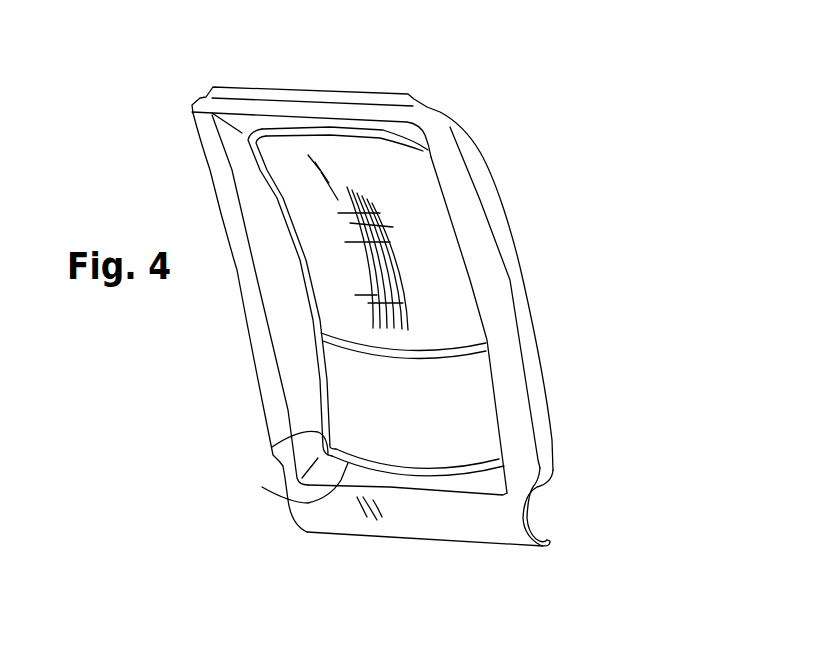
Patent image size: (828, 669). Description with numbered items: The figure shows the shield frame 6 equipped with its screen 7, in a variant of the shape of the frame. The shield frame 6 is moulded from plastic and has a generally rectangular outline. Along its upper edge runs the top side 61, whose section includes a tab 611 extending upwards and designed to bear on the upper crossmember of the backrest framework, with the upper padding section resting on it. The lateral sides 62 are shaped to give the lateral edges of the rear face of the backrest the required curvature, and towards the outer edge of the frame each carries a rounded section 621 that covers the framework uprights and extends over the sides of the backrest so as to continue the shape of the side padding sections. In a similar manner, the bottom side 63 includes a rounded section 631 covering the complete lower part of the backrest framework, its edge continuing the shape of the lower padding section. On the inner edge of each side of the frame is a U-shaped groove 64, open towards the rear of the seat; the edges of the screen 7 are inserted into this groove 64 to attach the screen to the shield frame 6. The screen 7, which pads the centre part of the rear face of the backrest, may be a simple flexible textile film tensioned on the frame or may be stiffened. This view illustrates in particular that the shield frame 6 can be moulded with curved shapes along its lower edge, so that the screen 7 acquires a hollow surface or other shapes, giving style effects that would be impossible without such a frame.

The shield frame 6 is at (457, 183).
The top side 61 is at (393, 127).
The tab 611 is at (245, 92).
The lateral sides 62 is at (272, 350).
The rounded section 621 is at (532, 350).
The bottom side 63 is at (353, 478).
The rounded section 631 is at (447, 517).
The U-shaped groove 64 is at (272, 447).
The screen 7 is at (437, 267).